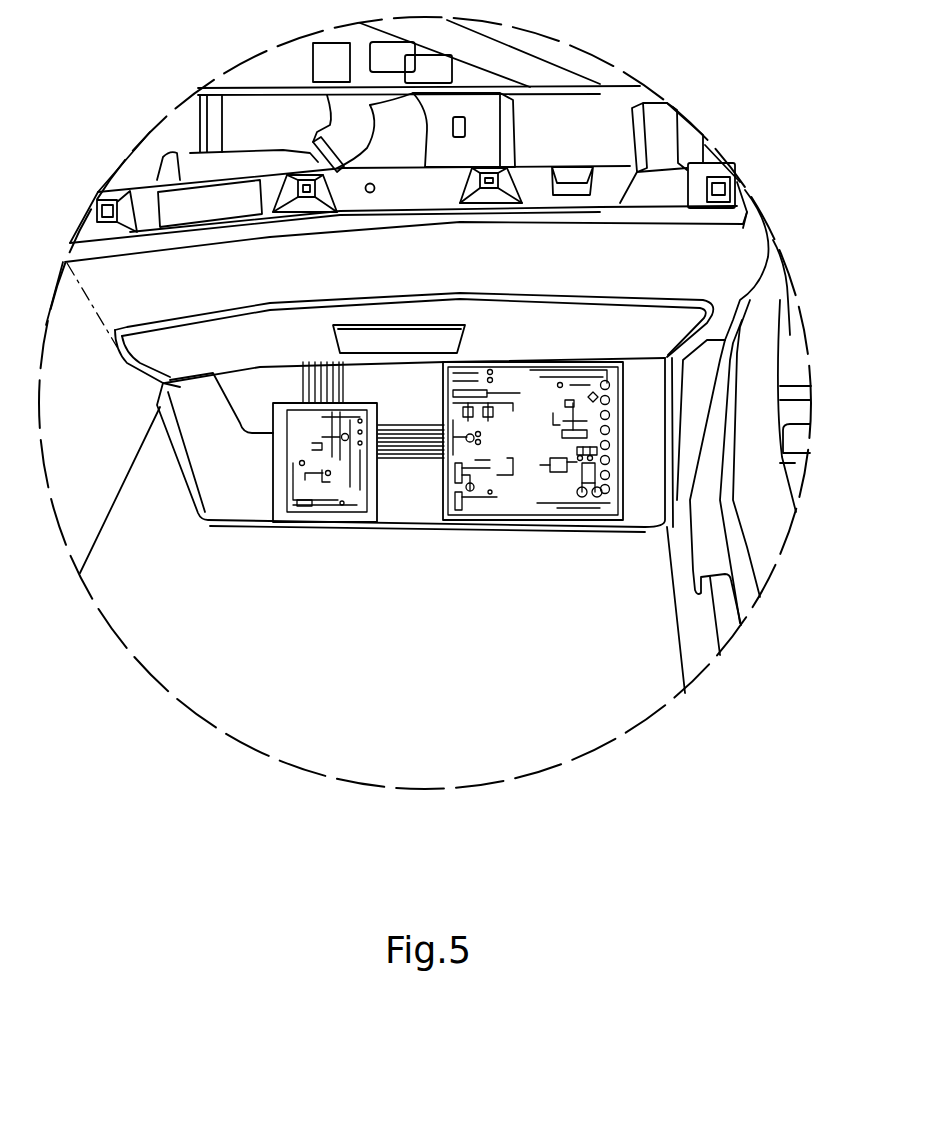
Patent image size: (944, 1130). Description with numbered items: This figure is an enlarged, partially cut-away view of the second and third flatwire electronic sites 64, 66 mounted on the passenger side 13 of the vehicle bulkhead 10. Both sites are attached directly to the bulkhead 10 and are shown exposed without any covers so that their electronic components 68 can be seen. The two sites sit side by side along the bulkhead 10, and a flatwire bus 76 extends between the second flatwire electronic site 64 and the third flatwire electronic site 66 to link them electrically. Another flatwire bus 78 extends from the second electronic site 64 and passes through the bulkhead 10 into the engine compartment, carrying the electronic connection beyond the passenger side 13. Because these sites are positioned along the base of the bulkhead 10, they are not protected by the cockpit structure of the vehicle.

The vehicle bulkhead 10 is at (645, 427).
The passenger side 13 is at (250, 390).
The second flatwire electronic site 64 is at (317, 521).
The third flatwire electronic site 66 is at (588, 525).
The electronic components 68 is at (343, 455).
The flatwire bus 76 is at (408, 462).
The flatwire bus 78 is at (305, 378).